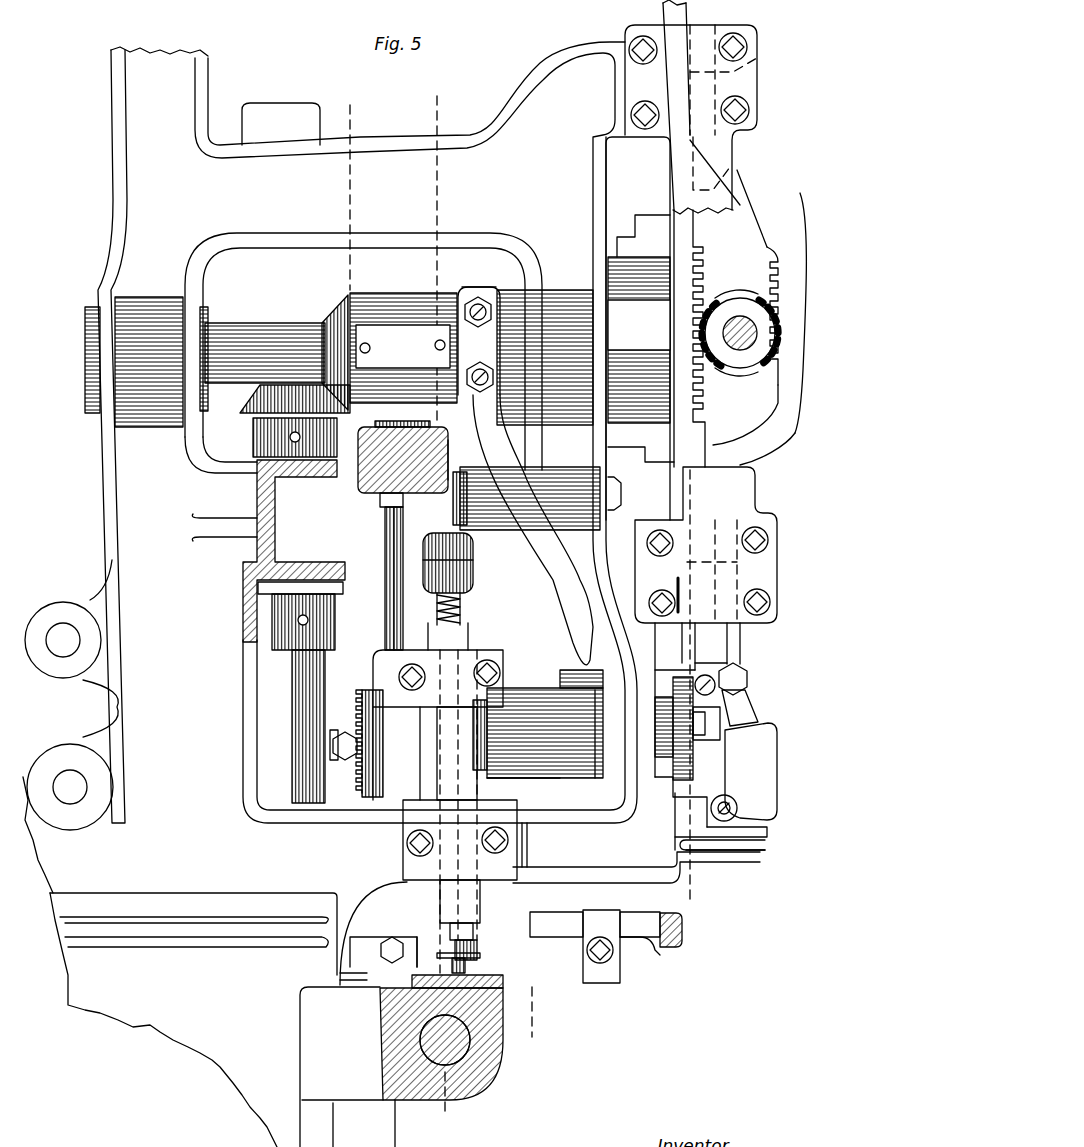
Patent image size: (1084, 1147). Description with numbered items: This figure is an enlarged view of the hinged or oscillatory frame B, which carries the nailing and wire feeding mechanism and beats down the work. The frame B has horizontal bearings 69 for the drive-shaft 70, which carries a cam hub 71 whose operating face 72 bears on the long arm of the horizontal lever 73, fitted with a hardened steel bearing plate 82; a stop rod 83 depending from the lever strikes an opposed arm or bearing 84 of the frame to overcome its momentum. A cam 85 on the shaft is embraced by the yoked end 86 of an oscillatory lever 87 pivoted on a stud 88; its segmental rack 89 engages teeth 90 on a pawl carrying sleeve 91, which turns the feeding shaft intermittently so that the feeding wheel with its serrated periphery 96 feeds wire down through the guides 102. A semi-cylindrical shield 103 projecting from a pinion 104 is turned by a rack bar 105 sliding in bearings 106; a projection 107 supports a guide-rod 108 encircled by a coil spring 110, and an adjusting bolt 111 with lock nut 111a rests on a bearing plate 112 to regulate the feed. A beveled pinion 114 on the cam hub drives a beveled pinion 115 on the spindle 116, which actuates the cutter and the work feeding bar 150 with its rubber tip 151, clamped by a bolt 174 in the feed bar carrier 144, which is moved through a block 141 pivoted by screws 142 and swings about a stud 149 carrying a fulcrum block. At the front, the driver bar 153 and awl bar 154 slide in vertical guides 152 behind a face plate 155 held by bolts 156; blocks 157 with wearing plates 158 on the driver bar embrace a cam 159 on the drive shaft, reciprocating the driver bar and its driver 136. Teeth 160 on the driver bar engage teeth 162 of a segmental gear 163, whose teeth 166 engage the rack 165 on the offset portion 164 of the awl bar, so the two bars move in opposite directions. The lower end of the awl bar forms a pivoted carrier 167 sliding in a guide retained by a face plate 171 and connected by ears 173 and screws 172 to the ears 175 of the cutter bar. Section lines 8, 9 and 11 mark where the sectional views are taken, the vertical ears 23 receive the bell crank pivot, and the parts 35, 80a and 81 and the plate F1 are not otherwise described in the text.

The section line 8— 8 is at (397, 612).
The section line 9— 9 is at (488, 565).
The section line 11— 11 is at (777, 556).
The vertical ears 23 is at (60, 757).
The pulley 35 is at (67, 670).
The horizontal bearings 69 is at (207, 313).
The drive-shaft 70 is at (255, 335).
The cam hub 71 is at (385, 310).
The operating face 72 is at (400, 424).
The horizontal lever 73 is at (446, 454).
The base block 80a is at (470, 1052).
The plate 81 is at (757, 850).
The bearing plate 82 is at (430, 424).
The stop rod 83 is at (388, 582).
The arm or bearing 84 is at (385, 652).
The cam 85 is at (476, 290).
The yoked end 86 is at (473, 343).
The oscillatory lever 87 is at (560, 548).
The stud 88 is at (456, 512).
The segmental rack 89 is at (598, 684).
The teeth 90 is at (593, 767).
The pawl carrying sleeve 91 is at (560, 752).
The serrated periphery 96 is at (687, 773).
The guides 102 is at (658, 571).
The semi-cylindrical shield 103 is at (545, 782).
The pinion 104 is at (399, 757).
The rack bar 105 is at (432, 902).
The bearings 106 is at (449, 791).
The projection 107 is at (395, 554).
The guide-rod 108 is at (463, 605).
The coil spring 110 is at (471, 575).
The adjusting bolt 111 is at (478, 940).
The lock nut 111a is at (457, 930).
The bearing plate 112 is at (505, 985).
The beveled wheel or pinion 114 is at (330, 312).
The beveled wheel or pinion 115 is at (248, 410).
The spindle 116 is at (322, 695).
The driver 136 is at (710, 775).
The block 141 is at (417, 940).
The screws 142 is at (392, 938).
The feed bar carrier 144 is at (335, 976).
The stud 149 is at (482, 956).
The work feeding bar 150 is at (648, 950).
The tip 151 is at (685, 932).
The vertical channels or guides 152 is at (748, 70).
The driver bar 153 is at (664, 16).
The awl bar 154 is at (705, 22).
The face plate 155 is at (735, 157).
The bolts 156 is at (745, 108).
The blocks 157 is at (657, 217).
The wearing plates 158 is at (620, 255).
The cam 159 is at (639, 340).
The teeth 160 is at (703, 272).
The teeth 162 is at (717, 372).
The segmental gear 163 is at (716, 338).
The intermediate portion 164 is at (771, 301).
The rack 165 is at (792, 438).
The teeth 166 is at (763, 283).
The carrier 167 is at (748, 708).
The face plate 171 is at (777, 788).
The screws 172 is at (740, 808).
The ears 173 is at (765, 828).
The clamp bolt 174 is at (630, 973).
The ears 175 is at (712, 851).
The oscillatory frame B is at (391, 594).
The plate F1 is at (193, 1020).